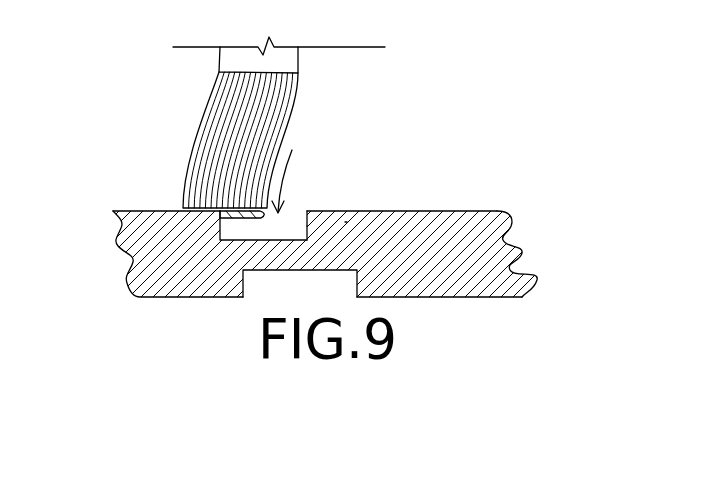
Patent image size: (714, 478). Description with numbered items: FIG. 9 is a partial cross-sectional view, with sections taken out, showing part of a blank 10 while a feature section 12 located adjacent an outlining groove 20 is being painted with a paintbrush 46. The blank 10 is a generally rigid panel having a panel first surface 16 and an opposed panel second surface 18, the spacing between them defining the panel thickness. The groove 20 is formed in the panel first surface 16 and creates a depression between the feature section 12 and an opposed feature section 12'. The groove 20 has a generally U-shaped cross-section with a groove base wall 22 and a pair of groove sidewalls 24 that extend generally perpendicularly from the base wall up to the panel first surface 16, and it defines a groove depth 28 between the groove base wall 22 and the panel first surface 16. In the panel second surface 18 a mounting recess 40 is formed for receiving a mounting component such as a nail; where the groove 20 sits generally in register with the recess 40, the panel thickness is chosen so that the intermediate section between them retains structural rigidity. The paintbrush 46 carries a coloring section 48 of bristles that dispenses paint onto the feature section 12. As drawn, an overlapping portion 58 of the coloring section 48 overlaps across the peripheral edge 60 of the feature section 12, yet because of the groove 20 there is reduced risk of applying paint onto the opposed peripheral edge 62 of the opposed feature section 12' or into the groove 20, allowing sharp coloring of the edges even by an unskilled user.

The blank 10 is at (150, 250).
The feature section 12 is at (178, 195).
The opposed feature section 12' is at (422, 237).
The panel first surface 16 is at (448, 211).
The panel second surface 18 is at (447, 298).
The groove 20 is at (292, 169).
The groove base wall 22 is at (272, 240).
The groove sidewall 24 is at (306, 232).
The groove depth 28 is at (345, 222).
The mounting recess 40 is at (356, 294).
The paintbrush 46 is at (293, 64).
The coloring section 48 is at (263, 107).
The overlapping portion 58 is at (243, 218).
The peripheral edge 60 is at (213, 212).
The opposed peripheral edge 62 is at (306, 211).